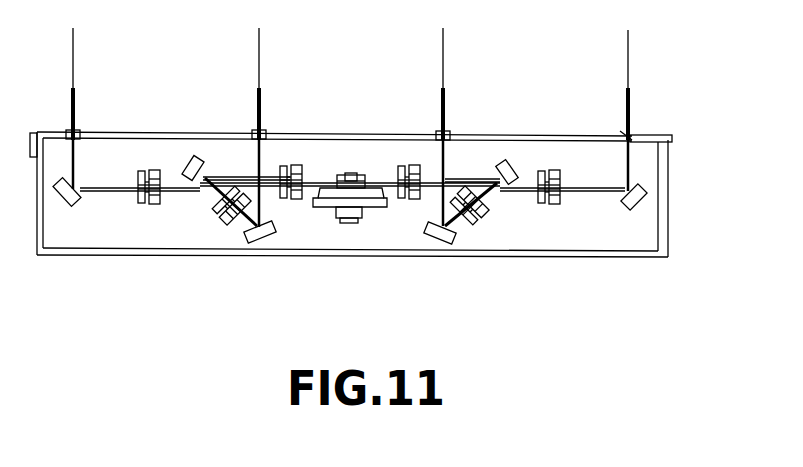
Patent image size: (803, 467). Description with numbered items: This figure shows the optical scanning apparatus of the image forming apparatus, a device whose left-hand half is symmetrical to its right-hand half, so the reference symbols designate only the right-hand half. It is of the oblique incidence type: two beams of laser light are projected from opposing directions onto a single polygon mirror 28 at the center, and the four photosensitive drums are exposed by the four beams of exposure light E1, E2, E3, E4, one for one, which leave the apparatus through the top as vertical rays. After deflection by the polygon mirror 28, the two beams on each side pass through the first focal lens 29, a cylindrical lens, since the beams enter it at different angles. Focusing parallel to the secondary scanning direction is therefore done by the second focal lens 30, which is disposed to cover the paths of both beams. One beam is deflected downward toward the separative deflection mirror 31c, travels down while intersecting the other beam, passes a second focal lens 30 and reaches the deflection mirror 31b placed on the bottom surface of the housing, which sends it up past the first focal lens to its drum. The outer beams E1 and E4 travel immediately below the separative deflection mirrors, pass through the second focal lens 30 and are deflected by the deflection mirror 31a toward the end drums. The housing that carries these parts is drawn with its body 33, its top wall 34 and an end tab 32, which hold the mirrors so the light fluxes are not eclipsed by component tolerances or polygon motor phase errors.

The polygon mirror 28 is at (382, 203).
The first focal lens 29 is at (393, 180).
The second focal lens 30 is at (479, 216).
The deflection mirror 31a is at (643, 203).
The deflection mirror 31b is at (448, 242).
The separative deflection mirror 31c is at (516, 160).
The housing tab 32 is at (645, 134).
The housing 33 is at (215, 257).
The housing top wall 34 is at (137, 133).
The beam of exposure light E1 is at (645, 103).
The beam of exposure light E2 is at (460, 120).
The beam of exposure light E3 is at (277, 121).
The beam of exposure light E4 is at (90, 102).